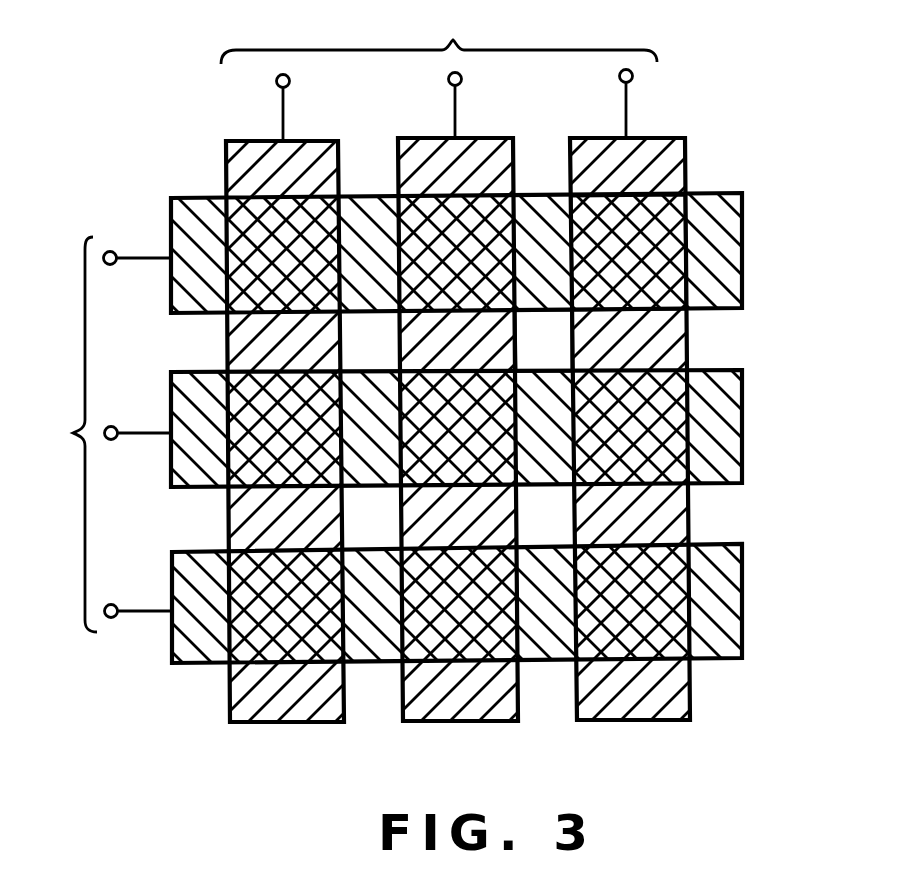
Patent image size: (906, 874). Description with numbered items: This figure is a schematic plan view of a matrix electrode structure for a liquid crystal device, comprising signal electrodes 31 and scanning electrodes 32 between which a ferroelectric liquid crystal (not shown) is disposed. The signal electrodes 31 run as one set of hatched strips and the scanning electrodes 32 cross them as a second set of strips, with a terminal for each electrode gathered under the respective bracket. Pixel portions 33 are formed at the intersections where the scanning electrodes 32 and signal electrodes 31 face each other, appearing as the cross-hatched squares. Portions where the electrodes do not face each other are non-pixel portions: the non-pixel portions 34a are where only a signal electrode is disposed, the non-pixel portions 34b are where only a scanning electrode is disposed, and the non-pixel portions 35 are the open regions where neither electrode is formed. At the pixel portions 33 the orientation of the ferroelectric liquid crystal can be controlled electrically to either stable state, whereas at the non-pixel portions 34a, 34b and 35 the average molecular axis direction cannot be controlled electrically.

The signal electrodes 31 is at (468, 23).
The scanning electrodes 32 is at (64, 452).
The pixel portions 33 is at (684, 193).
The non-pixel portions 34a is at (675, 146).
The non-pixel portions 34b is at (742, 263).
The non-pixel portions 35 is at (553, 347).